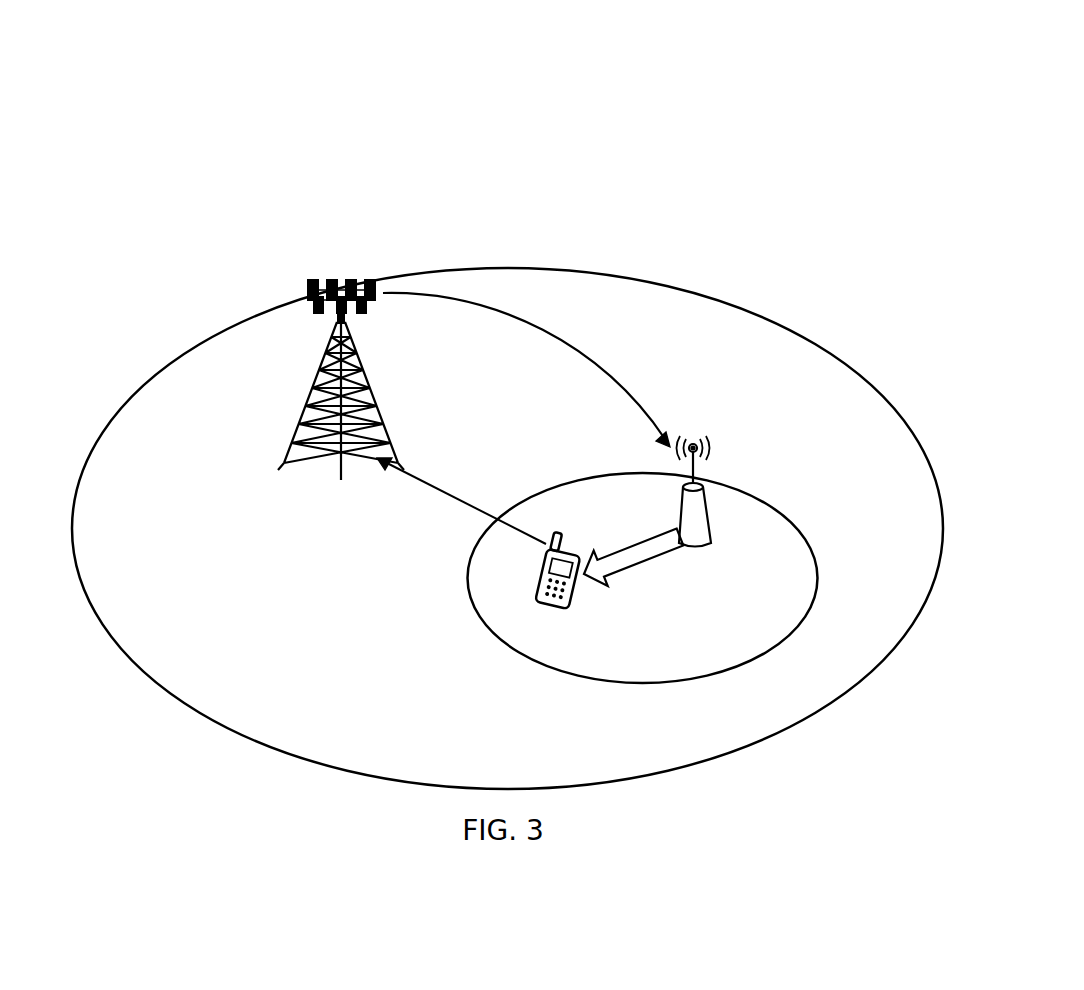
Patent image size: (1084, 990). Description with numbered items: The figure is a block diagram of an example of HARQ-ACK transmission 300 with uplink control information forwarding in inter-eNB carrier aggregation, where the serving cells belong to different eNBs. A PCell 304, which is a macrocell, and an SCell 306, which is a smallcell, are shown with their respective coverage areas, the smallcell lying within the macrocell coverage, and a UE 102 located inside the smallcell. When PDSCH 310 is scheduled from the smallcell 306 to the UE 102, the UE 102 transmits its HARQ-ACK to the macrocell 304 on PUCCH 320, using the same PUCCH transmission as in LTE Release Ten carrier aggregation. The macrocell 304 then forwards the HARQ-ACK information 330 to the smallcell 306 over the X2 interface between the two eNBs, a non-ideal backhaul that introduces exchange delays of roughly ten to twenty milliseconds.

The HARQ-ACK transmission 300 is at (788, 87).
The PCell 304 is at (341, 353).
The SCell 306 is at (643, 537).
The UE 102 is at (542, 567).
The PDSCH 310 is at (670, 566).
The PUCCH 320 is at (462, 496).
The HARQ-ACK information 330 is at (526, 370).